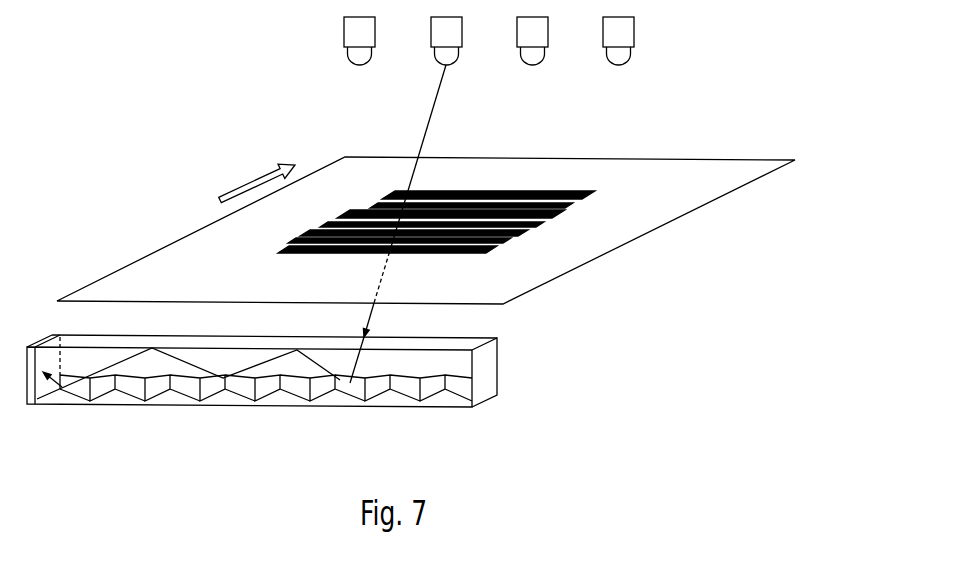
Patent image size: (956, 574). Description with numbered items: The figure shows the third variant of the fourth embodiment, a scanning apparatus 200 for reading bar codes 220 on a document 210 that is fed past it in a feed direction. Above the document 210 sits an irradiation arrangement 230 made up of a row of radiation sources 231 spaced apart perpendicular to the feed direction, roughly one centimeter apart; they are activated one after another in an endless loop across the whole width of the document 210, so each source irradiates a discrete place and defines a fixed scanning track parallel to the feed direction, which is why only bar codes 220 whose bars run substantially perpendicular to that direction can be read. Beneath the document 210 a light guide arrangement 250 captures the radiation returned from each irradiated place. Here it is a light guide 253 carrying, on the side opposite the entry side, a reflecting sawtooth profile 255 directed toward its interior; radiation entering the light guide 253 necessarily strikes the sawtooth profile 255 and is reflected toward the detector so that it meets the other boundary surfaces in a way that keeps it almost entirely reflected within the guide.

The display device 200 is at (147, 193).
The document 210 is at (120, 283).
The bar codes 220 is at (486, 249).
The irradiation arrangement 230 is at (717, 37).
The radiation sources 231 is at (603, 43).
The light guide arrangement 250 is at (632, 371).
The light guide 253 is at (490, 378).
The reflecting sawtooth profile 255 is at (290, 406).